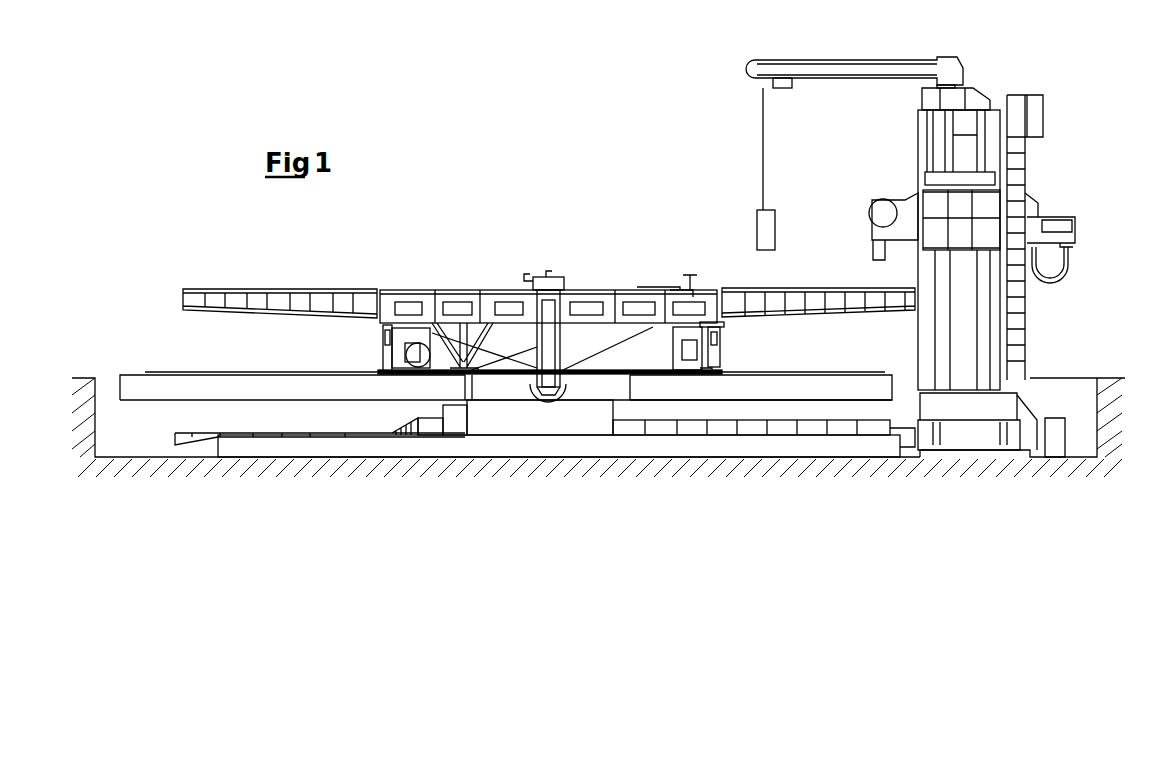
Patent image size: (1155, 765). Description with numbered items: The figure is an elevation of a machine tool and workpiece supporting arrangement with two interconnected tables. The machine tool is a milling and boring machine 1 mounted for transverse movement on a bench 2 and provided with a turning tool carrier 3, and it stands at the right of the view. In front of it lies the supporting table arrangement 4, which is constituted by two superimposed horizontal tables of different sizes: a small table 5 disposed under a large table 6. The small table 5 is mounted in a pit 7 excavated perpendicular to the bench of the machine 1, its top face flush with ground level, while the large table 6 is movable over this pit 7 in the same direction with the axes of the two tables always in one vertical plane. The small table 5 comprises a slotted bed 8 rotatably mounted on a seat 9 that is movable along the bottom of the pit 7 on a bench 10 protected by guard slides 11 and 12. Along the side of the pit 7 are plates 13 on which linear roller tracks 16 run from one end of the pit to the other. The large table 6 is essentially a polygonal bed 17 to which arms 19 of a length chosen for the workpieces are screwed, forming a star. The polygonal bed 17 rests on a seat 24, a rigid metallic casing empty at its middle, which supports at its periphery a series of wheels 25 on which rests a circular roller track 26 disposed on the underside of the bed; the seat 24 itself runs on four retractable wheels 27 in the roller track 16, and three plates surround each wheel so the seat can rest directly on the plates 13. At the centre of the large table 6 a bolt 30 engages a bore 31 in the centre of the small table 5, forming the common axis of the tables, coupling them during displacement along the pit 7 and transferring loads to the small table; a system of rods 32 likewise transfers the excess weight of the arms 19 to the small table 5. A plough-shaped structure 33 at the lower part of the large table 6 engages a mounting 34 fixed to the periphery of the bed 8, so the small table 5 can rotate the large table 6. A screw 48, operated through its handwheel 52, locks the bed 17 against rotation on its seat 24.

The milling and boring machine 1 is at (957, 62).
The bench 2 is at (991, 425).
The turning tool carrier 3 is at (905, 200).
The supporting table arrangement 4 is at (294, 286).
The small table 5 is at (507, 387).
The large table 6 is at (548, 278).
The pit 7 is at (98, 417).
The slotted bed 8 is at (547, 405).
The seat 9 is at (600, 419).
The bench 10 is at (578, 457).
The guard slide 11 is at (357, 433).
The guard slide 12 is at (695, 425).
The plates 13 is at (130, 375).
The linear roller tracks 16 is at (872, 375).
The polygonal bed 17 is at (440, 300).
The arms 19 is at (815, 300).
The seat 24 is at (380, 340).
The wheels 25 is at (722, 338).
The circular roller track 26 is at (722, 325).
The wheels 27 is at (385, 360).
The bolt 30 is at (550, 345).
The bore 31 is at (550, 390).
The rods 32 is at (628, 276).
The plough-shaped structure 33 is at (425, 373).
The mounting 34 is at (462, 374).
The screw 48 is at (668, 330).
The handwheel 52 is at (690, 290).